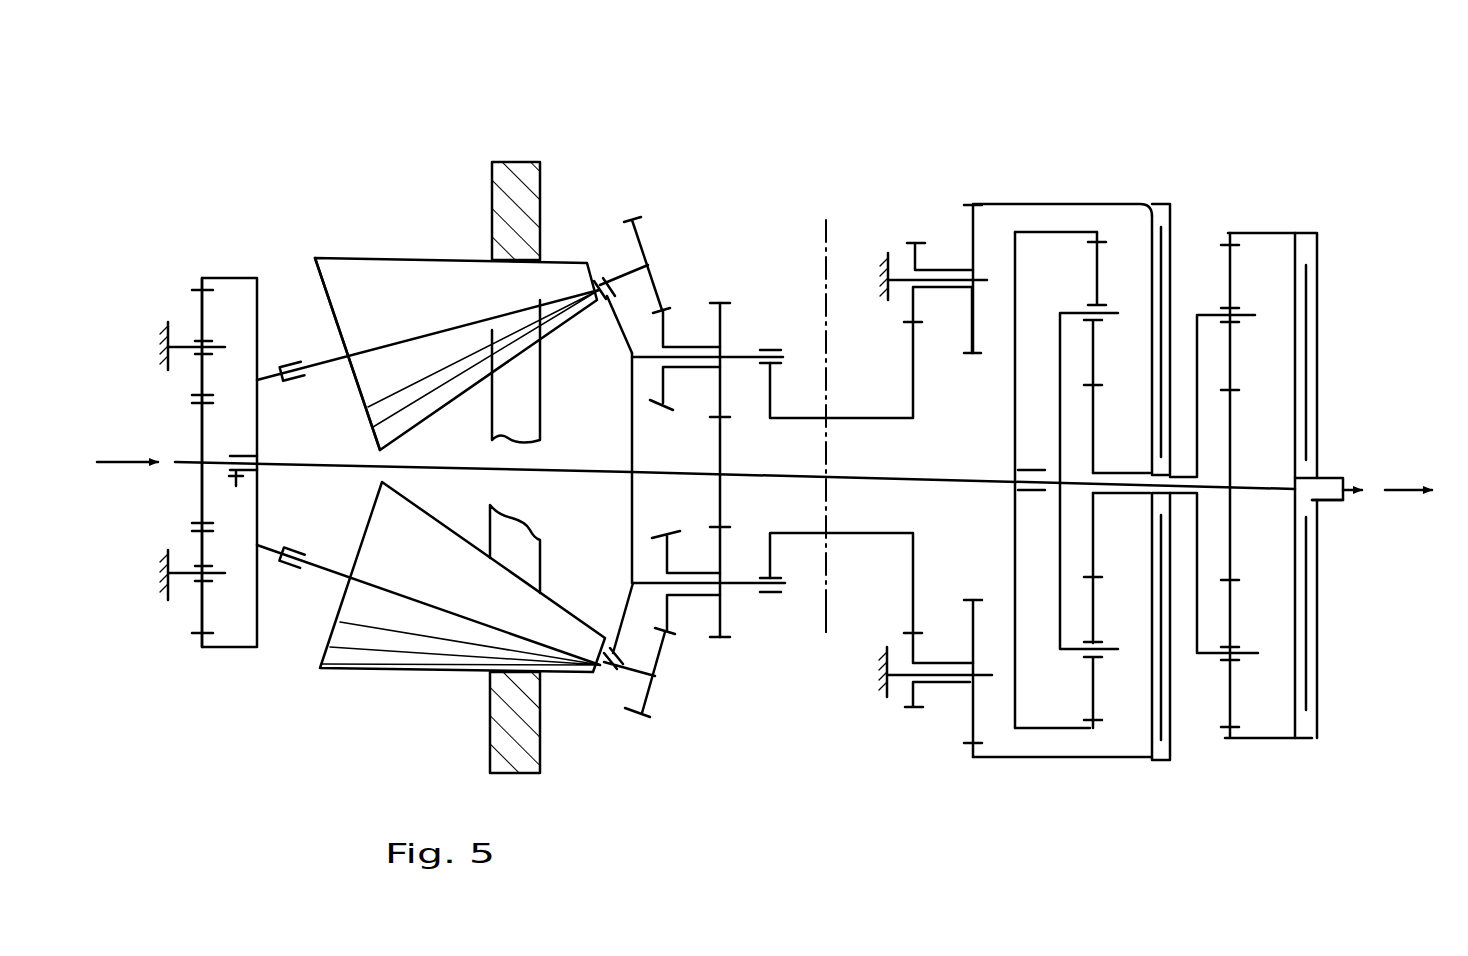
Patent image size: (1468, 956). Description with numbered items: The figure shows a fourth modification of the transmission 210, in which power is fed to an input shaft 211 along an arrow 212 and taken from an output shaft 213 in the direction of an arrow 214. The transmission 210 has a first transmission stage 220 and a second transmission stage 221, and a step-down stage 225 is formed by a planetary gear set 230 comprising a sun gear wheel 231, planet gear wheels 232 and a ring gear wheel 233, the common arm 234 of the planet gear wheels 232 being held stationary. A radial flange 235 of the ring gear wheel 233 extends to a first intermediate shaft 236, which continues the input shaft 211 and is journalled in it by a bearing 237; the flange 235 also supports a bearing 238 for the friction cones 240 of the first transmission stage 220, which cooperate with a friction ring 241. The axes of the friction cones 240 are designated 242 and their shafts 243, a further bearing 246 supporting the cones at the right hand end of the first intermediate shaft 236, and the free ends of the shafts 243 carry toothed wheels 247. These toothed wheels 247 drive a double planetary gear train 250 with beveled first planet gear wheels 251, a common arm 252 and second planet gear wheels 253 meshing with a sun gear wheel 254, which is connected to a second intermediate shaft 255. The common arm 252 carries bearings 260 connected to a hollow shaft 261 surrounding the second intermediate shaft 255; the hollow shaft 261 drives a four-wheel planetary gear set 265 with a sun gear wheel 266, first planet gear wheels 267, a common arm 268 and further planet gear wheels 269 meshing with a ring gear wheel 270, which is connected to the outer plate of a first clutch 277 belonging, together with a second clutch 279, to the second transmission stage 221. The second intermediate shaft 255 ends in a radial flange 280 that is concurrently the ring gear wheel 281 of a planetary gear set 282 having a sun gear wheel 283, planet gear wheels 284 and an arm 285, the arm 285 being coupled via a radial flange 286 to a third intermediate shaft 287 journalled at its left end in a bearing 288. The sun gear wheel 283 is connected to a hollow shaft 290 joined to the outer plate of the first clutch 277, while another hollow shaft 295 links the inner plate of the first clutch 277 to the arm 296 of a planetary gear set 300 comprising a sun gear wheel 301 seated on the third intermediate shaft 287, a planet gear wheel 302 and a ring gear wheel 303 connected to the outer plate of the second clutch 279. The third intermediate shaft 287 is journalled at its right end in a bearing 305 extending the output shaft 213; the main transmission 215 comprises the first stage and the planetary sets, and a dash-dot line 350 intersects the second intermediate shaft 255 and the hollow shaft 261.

The transmission 210 is at (826, 140).
The input shaft 211 is at (183, 458).
The arrow 212 is at (120, 470).
The output shaft 213 is at (1345, 484).
The arrow 214 is at (1412, 493).
The main transmission 215 is at (295, 148).
The first transmission stage 220 is at (393, 195).
The second transmission stage 221 is at (1290, 215).
The step-down stage 225 is at (228, 263).
The planetary gear set 230 is at (192, 268).
The sun gear wheel 231 is at (205, 400).
The planet gear wheels 232 is at (205, 372).
The ring gear wheel 233 is at (212, 288).
The common arm 234 is at (190, 345).
The radial flange 235 is at (258, 333).
The first intermediate shaft 236 is at (340, 466).
The bearing 237 is at (236, 478).
The bearing 238 is at (295, 376).
The friction cones 240 is at (380, 272).
The friction ring 241 is at (525, 210).
The axes of friction cones 242 is at (445, 323).
The shafts of friction cones 243 is at (650, 260).
The bearing 246 is at (600, 285).
The toothed wheels 247 is at (640, 215).
The planetary gear set 250 is at (667, 712).
The first planet gear wheels 251 is at (673, 312).
The common arm 252 is at (740, 355).
The second planet gear wheels 253 is at (725, 392).
The sun gear wheel 254 is at (716, 460).
The second intermediate shaft 255 is at (850, 478).
The bearings 260 is at (776, 348).
The hollow shaft 261 is at (832, 418).
The planetary gear set 265 is at (910, 228).
The sun gear wheel 266 is at (915, 372).
The first planet gear wheels 267 is at (915, 300).
The common arm 268 is at (945, 272).
The further planet gear wheels 269 is at (975, 350).
The ring gear wheel 270 is at (978, 200).
The first clutch 277 is at (1160, 215).
The second clutch 279 is at (1320, 300).
The radial flange 280 is at (1020, 285).
The ring gear wheel 281 is at (1030, 232).
The planetary gear set 282 is at (1092, 195).
The sun gear wheel 283 is at (1095, 445).
The planet gear wheels 284 is at (1095, 370).
The arm 285 is at (1100, 313).
The radial flange 286 is at (1060, 392).
The third intermediate shaft 287 is at (1232, 484).
The bearing 288 is at (1030, 470).
The hollow shaft 290 is at (1118, 496).
The hollow shaft 295 is at (1236, 402).
The arm 296 is at (1202, 315).
The planetary gear set 300 is at (1235, 750).
The sun gear wheel 301 is at (1232, 540).
The planet gear wheel 302 is at (1232, 620).
The ring gear wheel 303 is at (1232, 725).
The bearing 305 is at (1325, 502).
The dash-dot line 350 is at (826, 612).